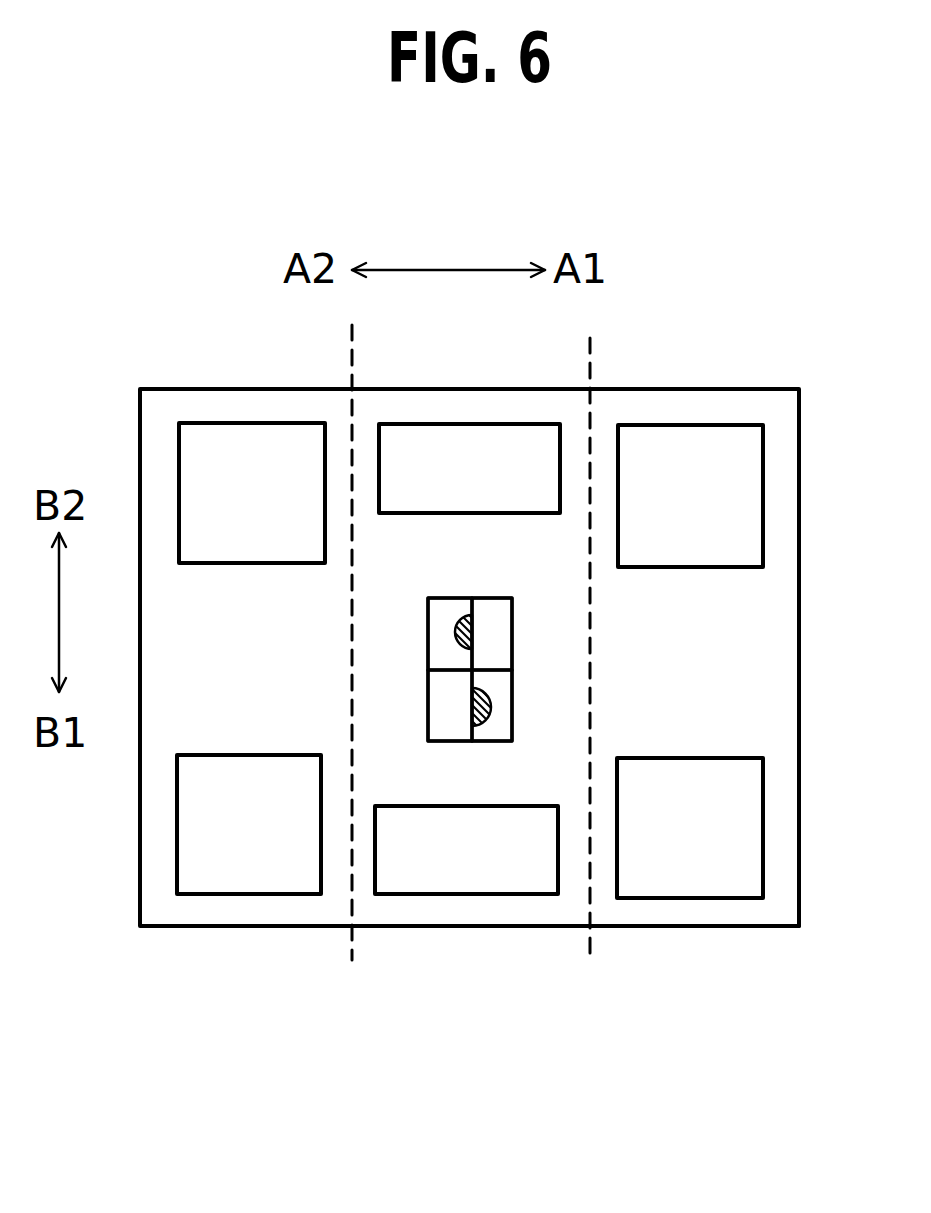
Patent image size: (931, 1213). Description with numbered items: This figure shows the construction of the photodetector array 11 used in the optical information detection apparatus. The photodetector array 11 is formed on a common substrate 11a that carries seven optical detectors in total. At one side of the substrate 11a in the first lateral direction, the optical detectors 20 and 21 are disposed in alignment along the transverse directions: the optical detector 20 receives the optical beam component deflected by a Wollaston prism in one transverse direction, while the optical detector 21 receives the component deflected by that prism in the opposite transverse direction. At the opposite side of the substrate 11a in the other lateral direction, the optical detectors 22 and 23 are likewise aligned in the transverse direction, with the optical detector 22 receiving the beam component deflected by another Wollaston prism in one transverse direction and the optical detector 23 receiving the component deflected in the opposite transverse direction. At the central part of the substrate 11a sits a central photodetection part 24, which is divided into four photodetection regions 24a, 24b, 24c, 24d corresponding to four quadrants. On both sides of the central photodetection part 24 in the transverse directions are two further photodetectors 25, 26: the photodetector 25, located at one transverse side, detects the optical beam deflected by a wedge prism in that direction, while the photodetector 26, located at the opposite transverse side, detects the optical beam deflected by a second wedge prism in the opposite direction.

The photodetector array 11 is at (127, 274).
The common substrate 11a is at (665, 928).
The optical detector 20 is at (247, 565).
The optical detector 21 is at (200, 755).
The optical detector 22 is at (740, 568).
The optical detector 23 is at (633, 757).
The central photodetection part 24 is at (428, 672).
The photodetection region 24a is at (438, 617).
The photodetection region 24b is at (442, 716).
The photodetection region 24c is at (496, 722).
The photodetection region 24d is at (490, 620).
The photodetector 25 is at (455, 895).
The photodetector 26 is at (465, 423).